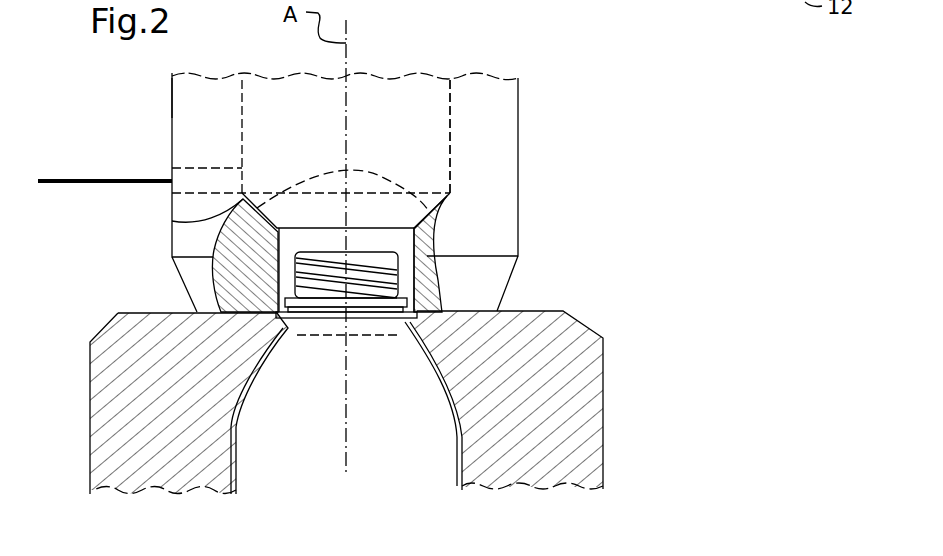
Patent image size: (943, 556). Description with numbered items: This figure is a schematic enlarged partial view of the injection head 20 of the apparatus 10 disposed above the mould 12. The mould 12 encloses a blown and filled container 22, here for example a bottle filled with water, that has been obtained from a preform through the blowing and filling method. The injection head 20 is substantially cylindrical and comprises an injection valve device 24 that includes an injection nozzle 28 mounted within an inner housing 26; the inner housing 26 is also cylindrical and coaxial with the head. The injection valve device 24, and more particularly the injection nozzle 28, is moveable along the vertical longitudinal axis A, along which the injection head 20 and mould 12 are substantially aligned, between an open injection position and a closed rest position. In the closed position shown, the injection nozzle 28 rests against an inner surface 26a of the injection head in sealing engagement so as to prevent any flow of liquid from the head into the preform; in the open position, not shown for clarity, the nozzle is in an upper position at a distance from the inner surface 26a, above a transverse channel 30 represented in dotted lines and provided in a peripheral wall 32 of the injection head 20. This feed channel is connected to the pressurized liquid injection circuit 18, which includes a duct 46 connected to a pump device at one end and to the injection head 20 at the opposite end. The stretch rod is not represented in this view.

The apparatus 10 is at (658, 121).
The mould 12 is at (603, 387).
The pressurized liquid injection circuit 18 is at (51, 178).
The injection head 20 is at (553, 98).
The blown and filled container 22 is at (330, 380).
The injection valve device 24 is at (308, 134).
The inner housing 26 is at (450, 108).
The inner surface 26a is at (165, 222).
The injection nozzle 28 is at (378, 208).
The transverse channel 30 is at (192, 178).
The peripheral wall 32 is at (188, 117).
The duct 46 is at (76, 180).